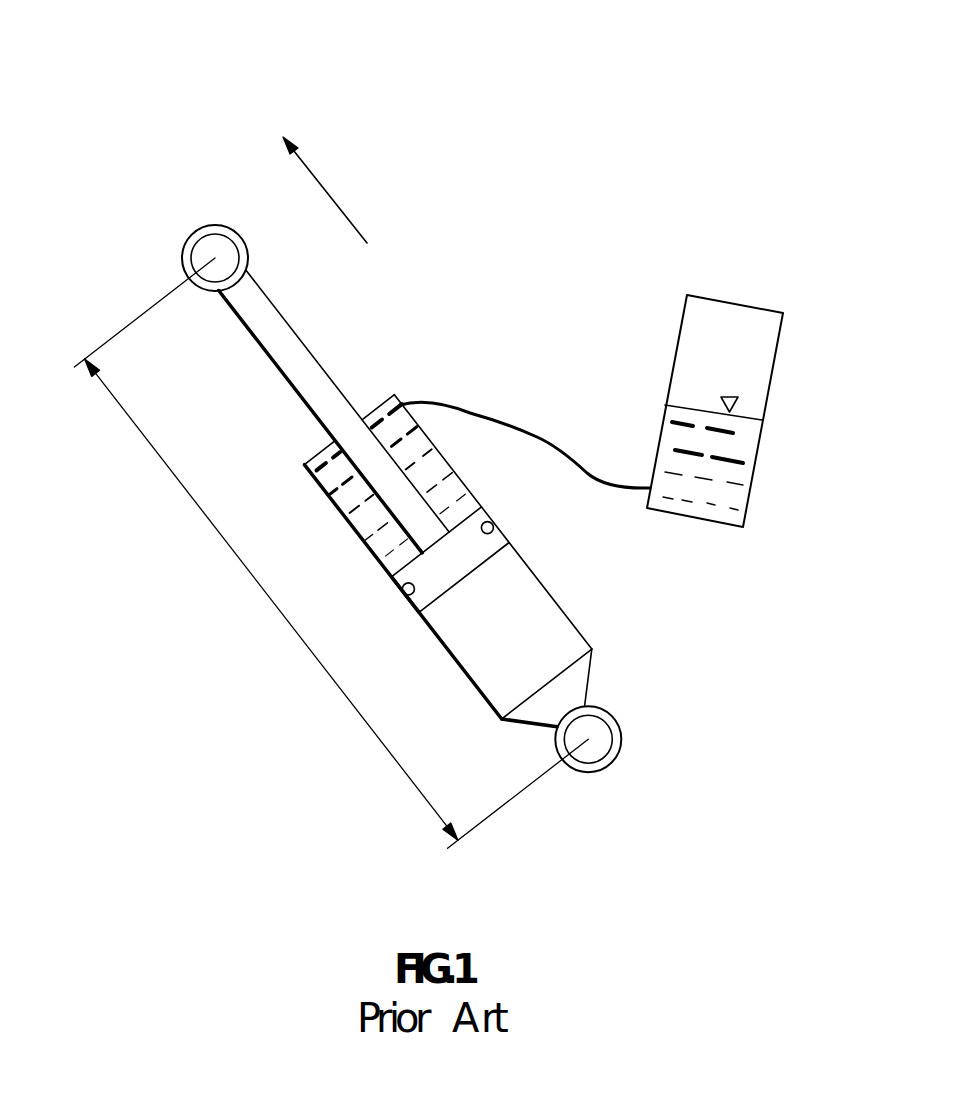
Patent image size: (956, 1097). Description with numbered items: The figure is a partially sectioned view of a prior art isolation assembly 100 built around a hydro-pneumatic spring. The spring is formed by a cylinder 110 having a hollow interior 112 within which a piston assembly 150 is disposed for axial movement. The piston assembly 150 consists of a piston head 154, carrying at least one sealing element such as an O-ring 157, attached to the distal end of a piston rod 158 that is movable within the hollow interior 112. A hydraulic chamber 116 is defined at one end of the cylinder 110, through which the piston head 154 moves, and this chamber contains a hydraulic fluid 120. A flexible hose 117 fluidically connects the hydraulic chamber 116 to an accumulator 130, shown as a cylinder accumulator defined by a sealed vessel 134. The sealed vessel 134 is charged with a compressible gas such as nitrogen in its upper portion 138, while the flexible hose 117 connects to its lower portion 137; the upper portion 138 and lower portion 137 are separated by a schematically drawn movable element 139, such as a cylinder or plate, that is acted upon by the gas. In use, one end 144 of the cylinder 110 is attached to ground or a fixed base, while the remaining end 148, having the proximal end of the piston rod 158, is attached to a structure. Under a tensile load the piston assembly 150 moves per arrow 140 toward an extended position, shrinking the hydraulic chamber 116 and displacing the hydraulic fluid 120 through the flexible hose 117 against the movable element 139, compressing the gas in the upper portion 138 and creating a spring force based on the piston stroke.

The isolation assembly 100 is at (89, 60).
The cylinder 110 is at (522, 564).
The hollow interior 112 is at (447, 561).
The hydraulic chamber 116 is at (378, 542).
The flexible hose 117 is at (525, 425).
The hydraulic fluid 120 is at (496, 475).
The accumulator 130 is at (756, 411).
The sealed vessel 134 is at (755, 437).
The lower portion 137 is at (744, 513).
The upper portion 138 is at (807, 318).
The movable element 139 is at (675, 370).
The arrow 140 is at (346, 190).
The end of the cylinder 144 is at (619, 763).
The remaining end of the cylinder 148 is at (176, 247).
The piston assembly 150 is at (331, 553).
The piston head 154 is at (386, 613).
The O-ring 157 is at (401, 559).
The piston rod 158 is at (330, 411).